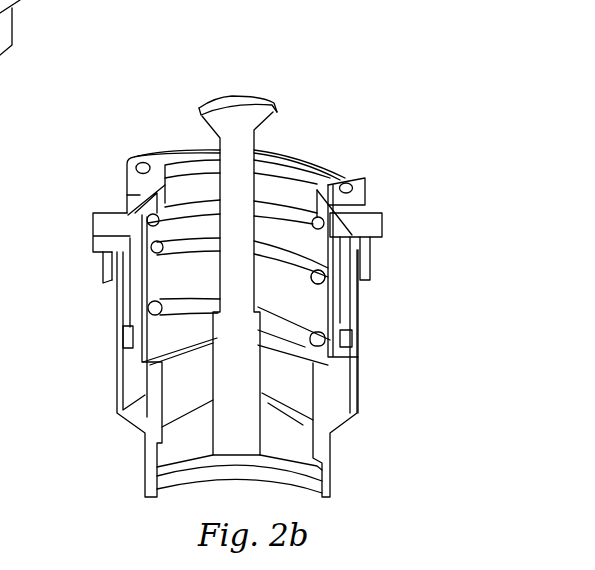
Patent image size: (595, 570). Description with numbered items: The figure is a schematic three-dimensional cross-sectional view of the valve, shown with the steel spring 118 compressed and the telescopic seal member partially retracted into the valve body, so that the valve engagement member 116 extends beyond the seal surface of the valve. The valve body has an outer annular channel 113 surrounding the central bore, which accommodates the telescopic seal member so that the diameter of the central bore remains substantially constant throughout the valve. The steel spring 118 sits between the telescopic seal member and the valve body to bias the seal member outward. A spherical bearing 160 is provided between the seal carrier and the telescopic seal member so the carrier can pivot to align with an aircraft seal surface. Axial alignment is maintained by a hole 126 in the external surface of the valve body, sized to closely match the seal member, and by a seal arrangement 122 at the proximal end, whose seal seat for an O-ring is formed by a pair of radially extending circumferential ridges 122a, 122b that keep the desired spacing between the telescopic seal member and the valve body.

The outer annular channel 113 is at (135, 375).
The valve engagement member 116 is at (242, 112).
The steel spring 118 is at (324, 280).
The seal arrangement 122 is at (339, 346).
The radially extending circumferential ridge 122a is at (354, 330).
The radially extending circumferential ridge 122b is at (352, 358).
The hole 126 is at (93, 241).
The spherical bearing 160 is at (366, 205).